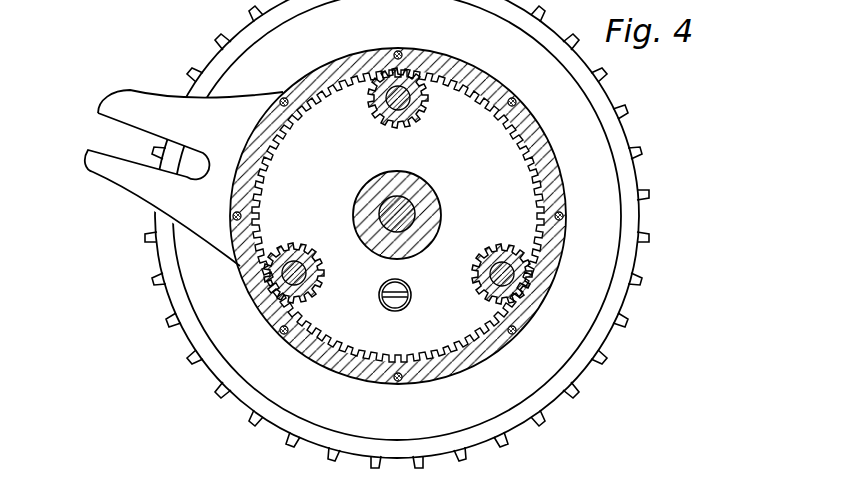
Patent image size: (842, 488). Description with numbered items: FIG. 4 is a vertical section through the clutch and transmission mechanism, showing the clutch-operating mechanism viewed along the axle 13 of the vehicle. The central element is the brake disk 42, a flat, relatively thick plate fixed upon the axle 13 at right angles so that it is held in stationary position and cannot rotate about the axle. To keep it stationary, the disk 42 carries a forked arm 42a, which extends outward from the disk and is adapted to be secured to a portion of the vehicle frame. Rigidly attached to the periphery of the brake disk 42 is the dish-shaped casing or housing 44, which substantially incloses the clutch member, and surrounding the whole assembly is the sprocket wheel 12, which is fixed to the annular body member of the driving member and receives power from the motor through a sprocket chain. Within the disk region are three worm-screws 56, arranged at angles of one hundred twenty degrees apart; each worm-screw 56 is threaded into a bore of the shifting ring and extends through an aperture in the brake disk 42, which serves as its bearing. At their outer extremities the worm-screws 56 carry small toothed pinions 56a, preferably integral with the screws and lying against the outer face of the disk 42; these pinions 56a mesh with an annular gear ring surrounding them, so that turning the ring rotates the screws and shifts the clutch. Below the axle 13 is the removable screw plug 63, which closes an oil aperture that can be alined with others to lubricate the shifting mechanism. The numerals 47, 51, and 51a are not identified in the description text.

The sprocket wheel 12 is at (644, 152).
The axle 13 is at (382, 207).
The brake disk 42 is at (398, 216).
The forked arm 42a is at (103, 170).
The casing or housing 44 is at (614, 227).
The sprocket chain wheel 47 is at (497, 481).
The internal ring gear 51 is at (546, 141).
The internal teeth of ring gear 51a is at (505, 77).
The worm-screws 56 is at (313, 292).
The toothed pinions 56a is at (392, 118).
The screw plug 63 is at (402, 282).